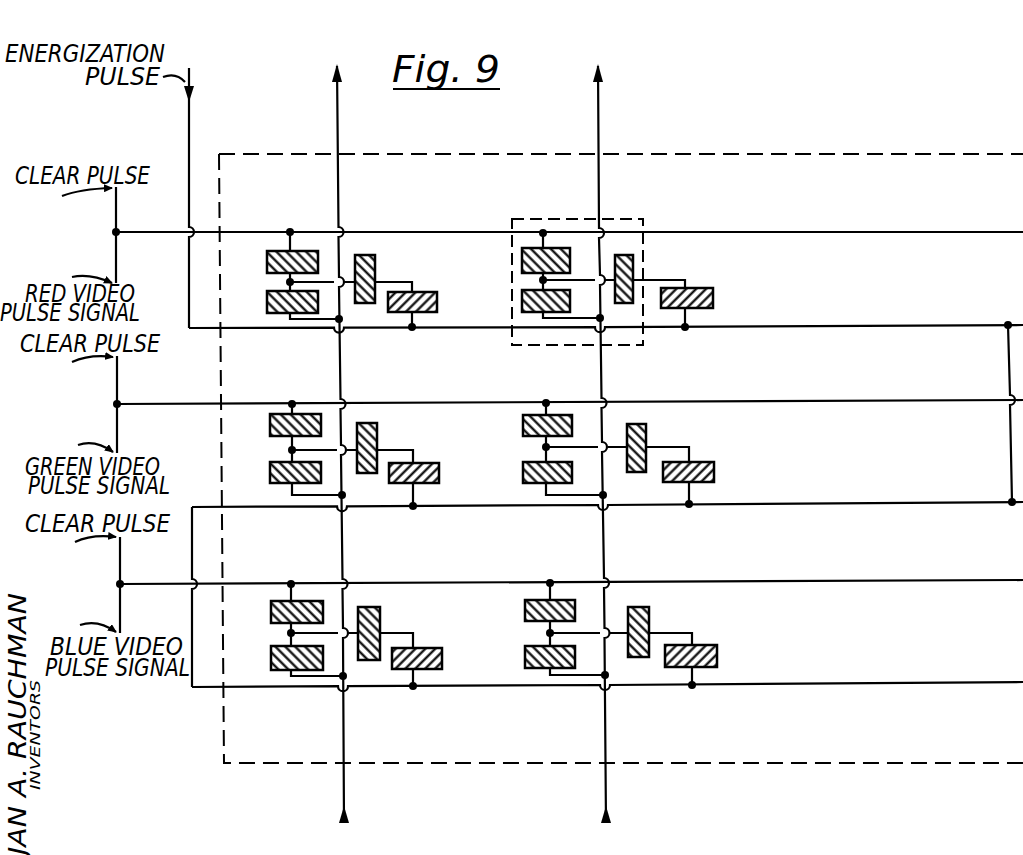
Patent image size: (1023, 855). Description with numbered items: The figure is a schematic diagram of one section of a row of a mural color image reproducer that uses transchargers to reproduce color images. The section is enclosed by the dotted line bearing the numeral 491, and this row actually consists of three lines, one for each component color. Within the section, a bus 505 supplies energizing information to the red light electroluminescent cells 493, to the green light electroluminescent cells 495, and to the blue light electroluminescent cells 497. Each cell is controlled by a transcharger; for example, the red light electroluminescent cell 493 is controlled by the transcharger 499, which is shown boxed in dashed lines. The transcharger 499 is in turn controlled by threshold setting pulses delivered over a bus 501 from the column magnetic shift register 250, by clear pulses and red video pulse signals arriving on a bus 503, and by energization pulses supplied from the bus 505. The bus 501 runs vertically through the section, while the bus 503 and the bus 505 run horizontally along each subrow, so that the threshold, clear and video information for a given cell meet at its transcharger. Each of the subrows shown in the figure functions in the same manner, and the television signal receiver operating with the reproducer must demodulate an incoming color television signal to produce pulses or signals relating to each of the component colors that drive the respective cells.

The section of a row of the mural color image reproducer 491 is at (424, 155).
The red light electroluminescent cell 493 is at (434, 293).
The green light electroluminescent cell 495 is at (426, 462).
The blue light electroluminescent cell 497 is at (438, 648).
The transcharger 499 is at (622, 218).
The bus 501 is at (599, 131).
The bus 503 is at (424, 233).
The bus 505 is at (724, 327).
The column magnetic shift register 250 is at (450, 729).